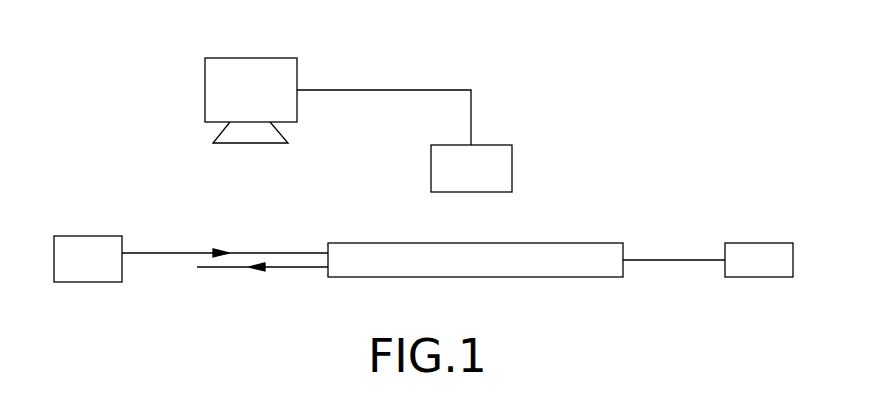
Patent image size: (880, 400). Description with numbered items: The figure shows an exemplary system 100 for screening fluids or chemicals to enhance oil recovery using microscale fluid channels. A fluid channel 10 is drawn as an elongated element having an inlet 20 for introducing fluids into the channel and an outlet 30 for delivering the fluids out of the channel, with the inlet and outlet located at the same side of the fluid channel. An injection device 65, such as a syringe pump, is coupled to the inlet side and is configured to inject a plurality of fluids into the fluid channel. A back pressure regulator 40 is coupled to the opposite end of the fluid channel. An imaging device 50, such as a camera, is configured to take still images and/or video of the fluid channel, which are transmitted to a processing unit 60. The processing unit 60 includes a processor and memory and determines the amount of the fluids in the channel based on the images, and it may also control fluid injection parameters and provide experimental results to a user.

The system 100 is at (122, 100).
The fluid channel 10 is at (387, 242).
The inlet 20 is at (190, 250).
The outlet 30 is at (220, 269).
The back pressure regulator 40 is at (743, 243).
The imaging device 50 is at (512, 154).
The processing unit 60 is at (298, 72).
The injection device 65 is at (73, 236).